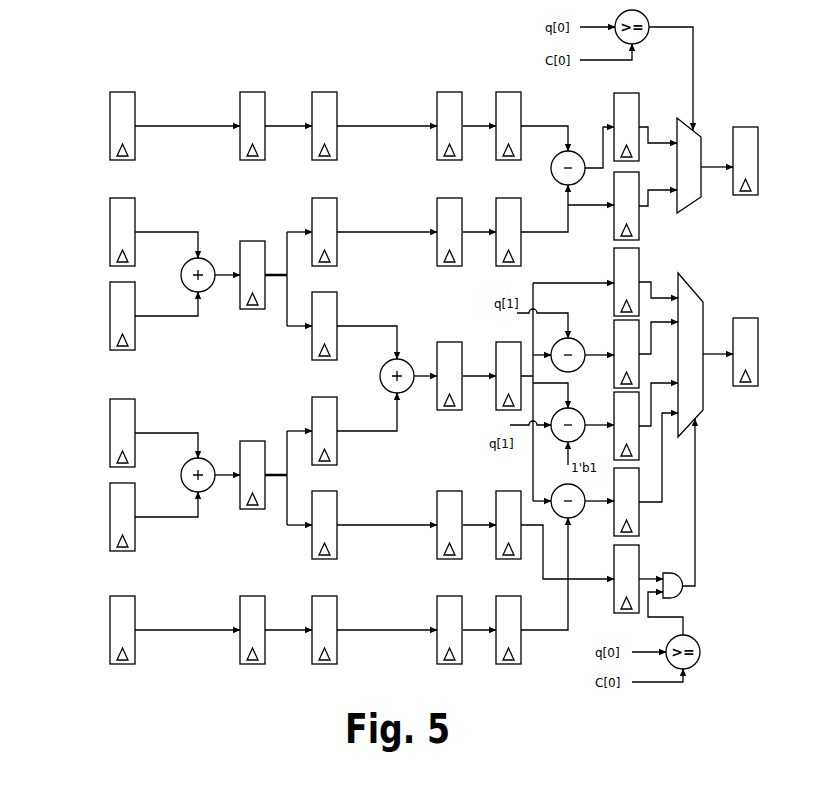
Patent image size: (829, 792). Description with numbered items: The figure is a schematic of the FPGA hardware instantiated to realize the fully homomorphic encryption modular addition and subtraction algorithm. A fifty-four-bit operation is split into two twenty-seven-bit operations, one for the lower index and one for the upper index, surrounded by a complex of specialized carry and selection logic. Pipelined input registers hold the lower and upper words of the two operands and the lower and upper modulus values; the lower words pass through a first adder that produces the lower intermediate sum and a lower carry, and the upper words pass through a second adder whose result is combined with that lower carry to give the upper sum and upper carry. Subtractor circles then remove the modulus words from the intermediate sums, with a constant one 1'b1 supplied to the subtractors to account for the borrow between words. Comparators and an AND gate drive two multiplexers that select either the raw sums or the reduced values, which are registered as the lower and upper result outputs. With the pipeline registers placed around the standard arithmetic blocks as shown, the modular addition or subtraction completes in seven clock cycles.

The constant one 1'b1 is at (574, 334).